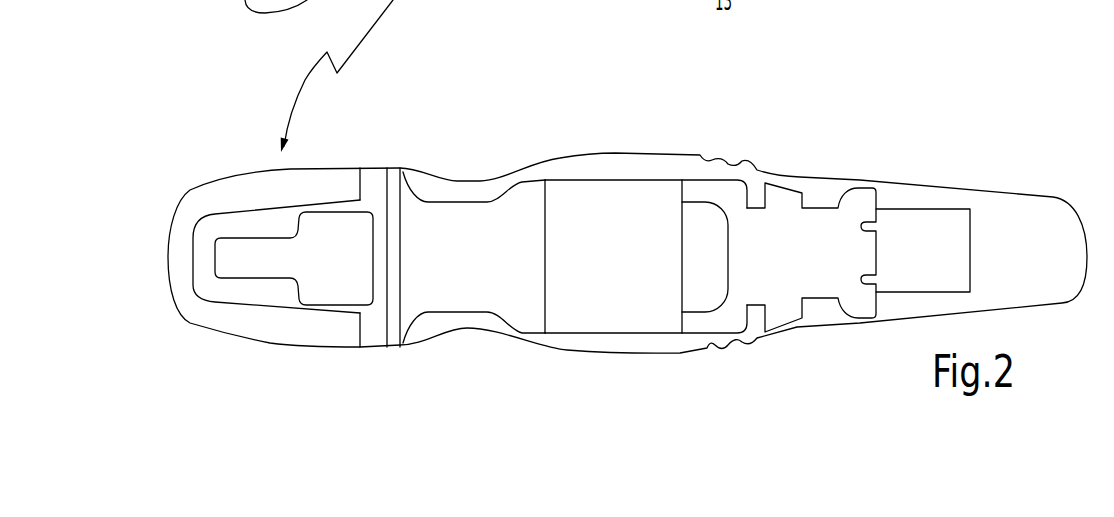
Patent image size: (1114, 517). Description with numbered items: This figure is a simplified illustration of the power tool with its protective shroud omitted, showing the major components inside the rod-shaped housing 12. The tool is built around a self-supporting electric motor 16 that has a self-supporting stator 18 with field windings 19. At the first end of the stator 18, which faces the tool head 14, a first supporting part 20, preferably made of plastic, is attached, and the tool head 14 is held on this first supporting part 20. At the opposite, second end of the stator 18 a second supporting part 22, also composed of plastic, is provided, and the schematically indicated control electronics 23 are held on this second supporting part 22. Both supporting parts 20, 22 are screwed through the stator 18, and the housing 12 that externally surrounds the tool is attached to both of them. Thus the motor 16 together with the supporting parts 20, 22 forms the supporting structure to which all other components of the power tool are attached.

The housing 12 is at (638, 168).
The tool head 14 is at (232, 323).
The self-supporting electric motor 16 is at (589, 166).
The self-supporting stator 18 is at (657, 207).
The field windings 19 is at (700, 223).
The first supporting part 20 is at (455, 228).
The second supporting part 22 is at (803, 230).
The control electronics 23 is at (927, 237).